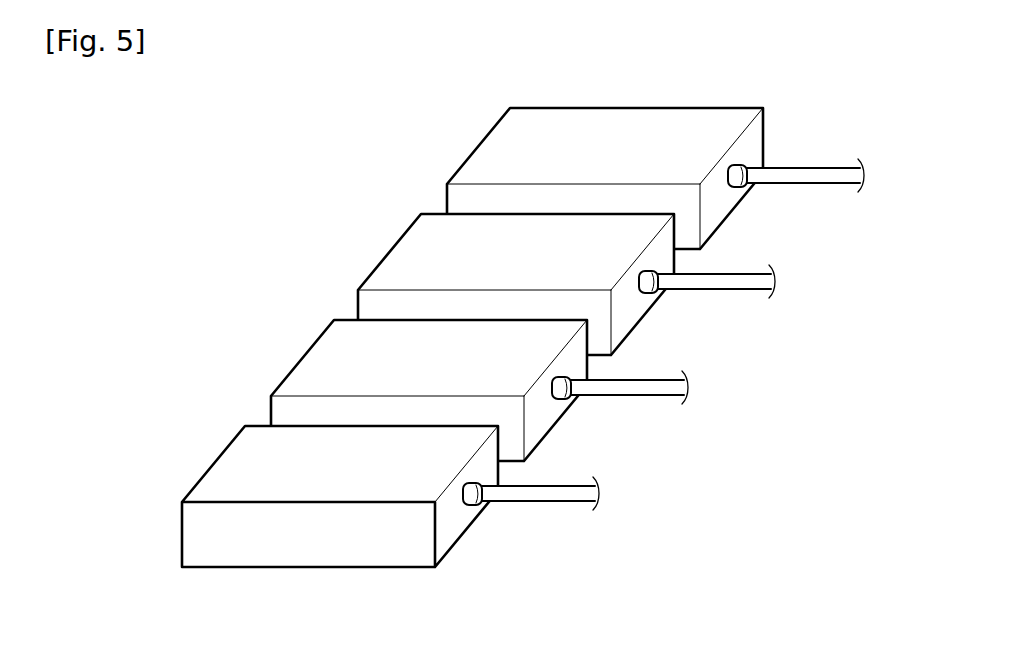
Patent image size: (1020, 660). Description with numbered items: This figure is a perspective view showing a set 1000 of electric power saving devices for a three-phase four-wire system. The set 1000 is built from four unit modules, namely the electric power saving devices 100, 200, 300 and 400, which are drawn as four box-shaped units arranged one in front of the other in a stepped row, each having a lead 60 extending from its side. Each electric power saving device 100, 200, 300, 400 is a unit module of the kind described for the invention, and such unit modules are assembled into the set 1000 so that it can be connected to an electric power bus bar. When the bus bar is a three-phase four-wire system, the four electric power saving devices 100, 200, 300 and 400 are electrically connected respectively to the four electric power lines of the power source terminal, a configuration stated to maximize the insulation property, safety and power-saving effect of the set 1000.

The set of electric power saving devices 1000 is at (313, 97).
The electric power saving device 100 is at (485, 160).
The electric power saving device 200 is at (417, 250).
The electric power saving device 300 is at (310, 375).
The electric power saving device 400 is at (238, 460).
The cooling pipe 60 is at (817, 176).